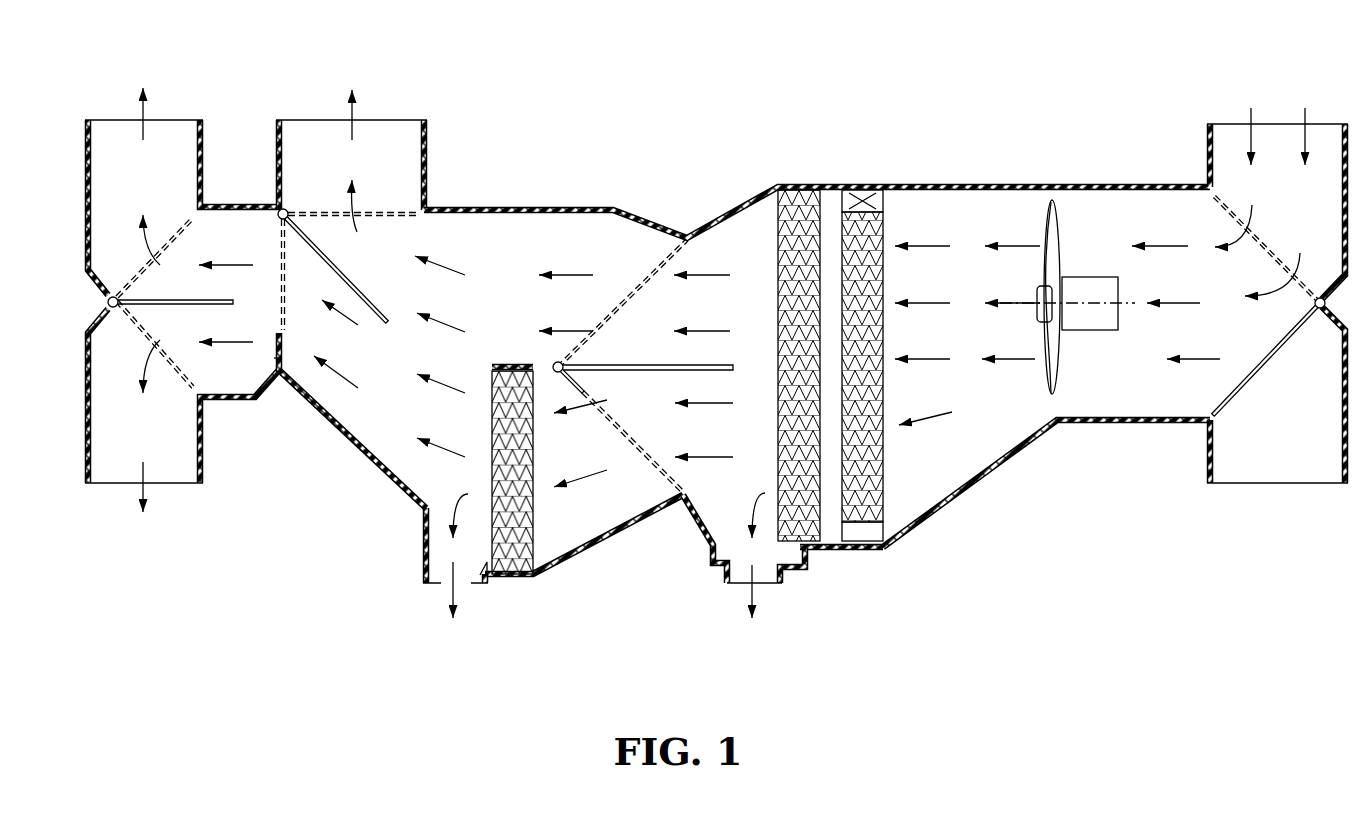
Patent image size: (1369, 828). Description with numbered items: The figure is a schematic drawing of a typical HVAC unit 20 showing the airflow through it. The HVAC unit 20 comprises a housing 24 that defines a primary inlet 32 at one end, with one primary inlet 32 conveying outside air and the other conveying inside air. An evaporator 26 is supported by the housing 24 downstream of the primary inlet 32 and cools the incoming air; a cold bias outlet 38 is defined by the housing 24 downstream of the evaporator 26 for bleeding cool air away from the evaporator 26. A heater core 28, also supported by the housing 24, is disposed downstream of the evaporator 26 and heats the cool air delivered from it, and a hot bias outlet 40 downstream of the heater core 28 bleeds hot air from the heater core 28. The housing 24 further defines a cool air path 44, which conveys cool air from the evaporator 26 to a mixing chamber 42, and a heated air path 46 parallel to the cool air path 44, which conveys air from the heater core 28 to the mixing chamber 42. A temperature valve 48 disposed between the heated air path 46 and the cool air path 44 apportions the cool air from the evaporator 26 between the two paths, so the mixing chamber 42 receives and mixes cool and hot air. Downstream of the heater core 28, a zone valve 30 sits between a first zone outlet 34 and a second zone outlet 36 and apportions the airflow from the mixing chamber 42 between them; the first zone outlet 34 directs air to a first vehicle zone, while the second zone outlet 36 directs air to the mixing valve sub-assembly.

The HVAC unit 20 is at (721, 354).
The housing 24 is at (540, 206).
The evaporator 26 is at (798, 203).
The heater core 28 is at (535, 505).
The zone valve 30 is at (176, 300).
The primary inlet 32 is at (1322, 125).
The first zone outlet 34 is at (123, 120).
The second zone outlet 36 is at (113, 484).
The cold bias outlet 38 is at (765, 584).
The hot bias outlet 40 is at (436, 580).
The mixing chamber 42 is at (411, 293).
The cool air path 44 is at (580, 293).
The heated air path 46 is at (430, 403).
The temperature valve 48 is at (667, 375).